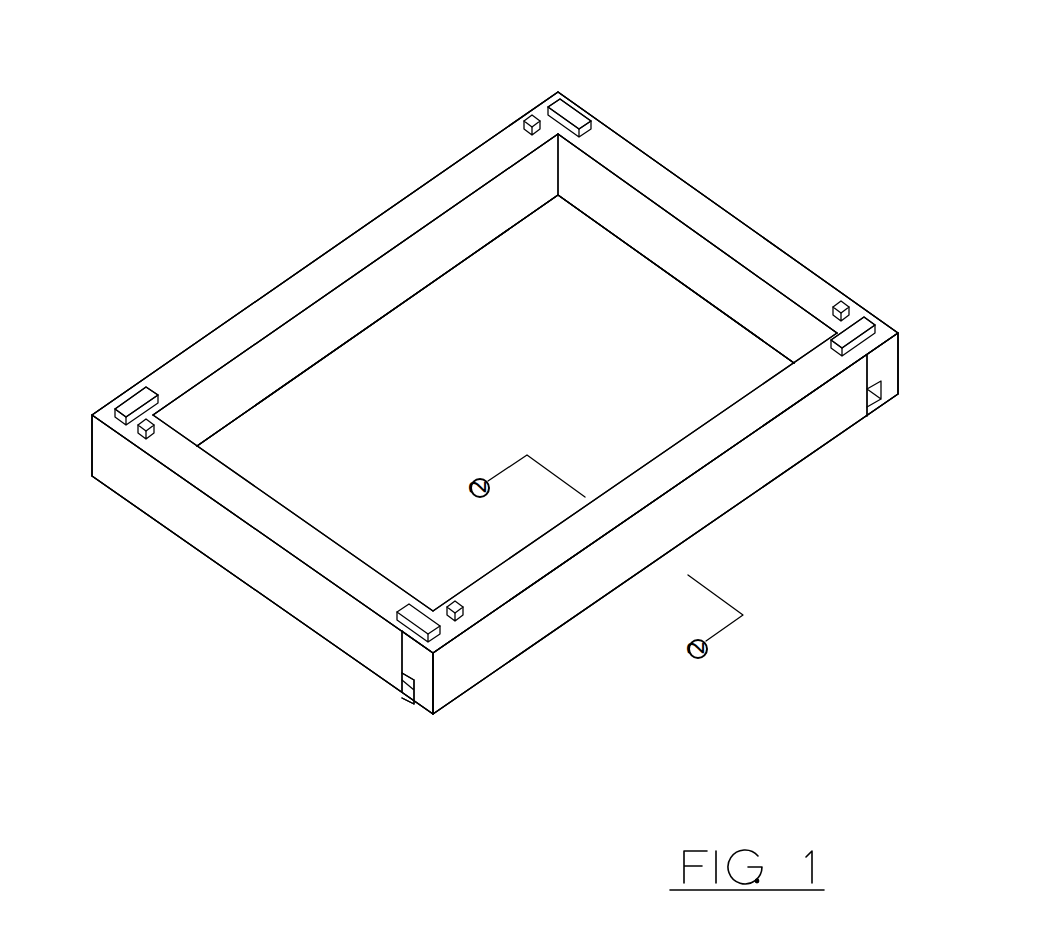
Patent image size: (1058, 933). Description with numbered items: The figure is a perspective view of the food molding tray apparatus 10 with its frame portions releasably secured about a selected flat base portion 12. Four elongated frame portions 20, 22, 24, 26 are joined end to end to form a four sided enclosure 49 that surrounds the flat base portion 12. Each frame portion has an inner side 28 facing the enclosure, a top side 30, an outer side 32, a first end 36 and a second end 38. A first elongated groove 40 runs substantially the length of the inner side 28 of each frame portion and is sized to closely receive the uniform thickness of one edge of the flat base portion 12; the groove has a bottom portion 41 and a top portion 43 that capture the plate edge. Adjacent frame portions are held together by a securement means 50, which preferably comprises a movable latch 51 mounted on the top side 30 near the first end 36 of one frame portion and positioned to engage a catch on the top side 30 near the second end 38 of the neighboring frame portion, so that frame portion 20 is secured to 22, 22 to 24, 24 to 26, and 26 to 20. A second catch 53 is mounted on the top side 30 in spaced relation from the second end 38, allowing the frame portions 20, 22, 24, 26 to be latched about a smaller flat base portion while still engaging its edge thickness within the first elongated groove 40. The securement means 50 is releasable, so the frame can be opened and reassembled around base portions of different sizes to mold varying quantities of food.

The food molding tray apparatus 10 is at (644, 128).
The flat base portion 12 is at (486, 406).
The frame portion 20 is at (461, 173).
The frame portion 22 is at (678, 202).
The frame portion 24 is at (749, 479).
The frame portion 26 is at (257, 566).
The inner side 28 is at (688, 262).
The top side 30 is at (733, 234).
The outer side 32 is at (315, 613).
The first end 36 is at (115, 405).
The second end 38 is at (92, 452).
The first elongated groove 40 is at (420, 702).
The bottom portion 41 is at (412, 700).
The top portion 43 is at (440, 662).
The four sided enclosure 49 is at (437, 336).
The securement means 50 is at (567, 113).
The movable latch 51 is at (859, 327).
The second catch 53 is at (843, 300).